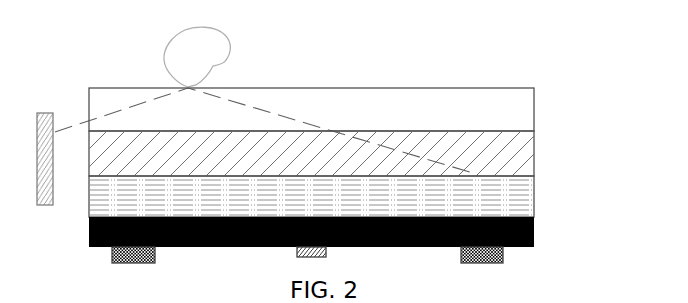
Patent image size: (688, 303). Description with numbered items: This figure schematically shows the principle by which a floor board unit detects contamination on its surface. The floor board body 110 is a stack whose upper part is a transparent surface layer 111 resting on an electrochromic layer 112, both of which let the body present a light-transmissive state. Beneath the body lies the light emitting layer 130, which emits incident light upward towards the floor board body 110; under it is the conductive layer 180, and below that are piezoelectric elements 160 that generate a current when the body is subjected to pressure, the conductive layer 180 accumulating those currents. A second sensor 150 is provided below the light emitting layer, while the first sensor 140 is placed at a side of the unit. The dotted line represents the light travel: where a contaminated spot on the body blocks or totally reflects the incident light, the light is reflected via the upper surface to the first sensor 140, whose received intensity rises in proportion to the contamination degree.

The floor board body 110 is at (332, 132).
The transparent surface layer 111 is at (534, 108).
The electrochromic layer 112 is at (534, 158).
The light emitting layer 130 is at (534, 201).
The first sensor 140 is at (43, 113).
The second sensor 150 is at (312, 257).
The piezoelectric element 160 is at (505, 258).
The conductive layer 180 is at (534, 230).